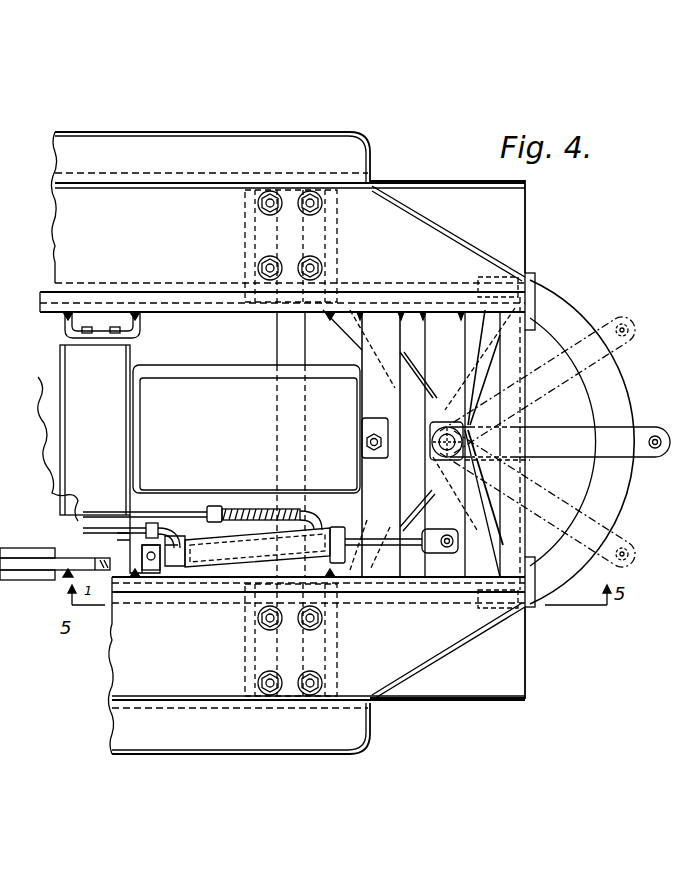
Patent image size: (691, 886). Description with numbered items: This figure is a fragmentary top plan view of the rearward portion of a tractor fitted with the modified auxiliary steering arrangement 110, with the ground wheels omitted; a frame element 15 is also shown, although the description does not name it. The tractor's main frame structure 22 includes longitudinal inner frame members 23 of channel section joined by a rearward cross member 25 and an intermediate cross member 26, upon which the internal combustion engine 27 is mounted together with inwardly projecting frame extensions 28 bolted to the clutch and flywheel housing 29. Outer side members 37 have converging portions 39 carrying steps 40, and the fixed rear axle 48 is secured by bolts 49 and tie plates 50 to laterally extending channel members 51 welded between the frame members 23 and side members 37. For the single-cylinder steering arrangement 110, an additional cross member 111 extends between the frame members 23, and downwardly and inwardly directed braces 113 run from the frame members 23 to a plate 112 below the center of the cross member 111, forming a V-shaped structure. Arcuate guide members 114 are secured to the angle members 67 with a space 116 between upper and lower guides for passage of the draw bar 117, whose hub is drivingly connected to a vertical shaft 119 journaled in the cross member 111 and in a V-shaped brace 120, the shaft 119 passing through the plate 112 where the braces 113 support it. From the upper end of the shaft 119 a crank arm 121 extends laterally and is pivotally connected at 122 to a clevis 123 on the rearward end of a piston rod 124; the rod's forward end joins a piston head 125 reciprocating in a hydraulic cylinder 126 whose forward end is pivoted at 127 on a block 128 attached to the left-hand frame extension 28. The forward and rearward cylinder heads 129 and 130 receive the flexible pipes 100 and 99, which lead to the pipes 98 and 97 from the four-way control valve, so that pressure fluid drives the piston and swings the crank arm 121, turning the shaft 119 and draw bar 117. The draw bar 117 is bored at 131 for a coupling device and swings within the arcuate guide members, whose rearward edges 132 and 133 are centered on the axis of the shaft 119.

The frame rail 15 is at (100, 680).
The main frame structure 22 is at (527, 272).
The longitudinal inner frame members 23 is at (205, 312).
The rearward cross member 25 is at (485, 462).
The intermediate cross member 26 is at (381, 444).
The internal combustion engine 27 is at (220, 365).
The frame extensions 28 is at (140, 329).
The clutch and flywheel housing 29 is at (70, 357).
The side members 37 is at (213, 174).
The converging portions 39 is at (440, 232).
The steps 40 is at (515, 212).
The rear axle 48 is at (277, 338).
The bolts 49 is at (258, 205).
The tie plates 50 is at (290, 258).
The channel members 51 is at (338, 234).
The angle members 67 is at (535, 300).
The pipe 97 is at (112, 527).
The pipe 98 is at (86, 511).
The flexible connecting pipe 99 is at (292, 508).
The flexible connecting pipe 100 is at (205, 508).
The modified auxiliary steering arrangement 110 is at (582, 300).
The cross member 111 is at (450, 343).
The plate 112 is at (449, 444).
The braces 113 is at (352, 354).
The arcuate guide member 114 is at (612, 470).
The space 116 is at (65, 557).
The draw bar 117 is at (612, 348).
The vertical shaft 119 is at (458, 446).
The V-shaped brace 120 is at (495, 364).
The crank arm 121 is at (545, 522).
The pivotal connection 122 is at (448, 556).
The clevis 123 is at (432, 556).
The piston rod 124 is at (378, 520).
The piston head 125 is at (238, 540).
The hydraulic cylinder 126 is at (185, 540).
The pivotal mounting 127 is at (150, 576).
The block 128 is at (133, 576).
The forward cylinder head 129 is at (175, 578).
The rearward cylinder head 130 is at (318, 512).
The bore 131 is at (652, 428).
The rearward edge 132 is at (45, 547).
The rearward edge 133 is at (45, 580).